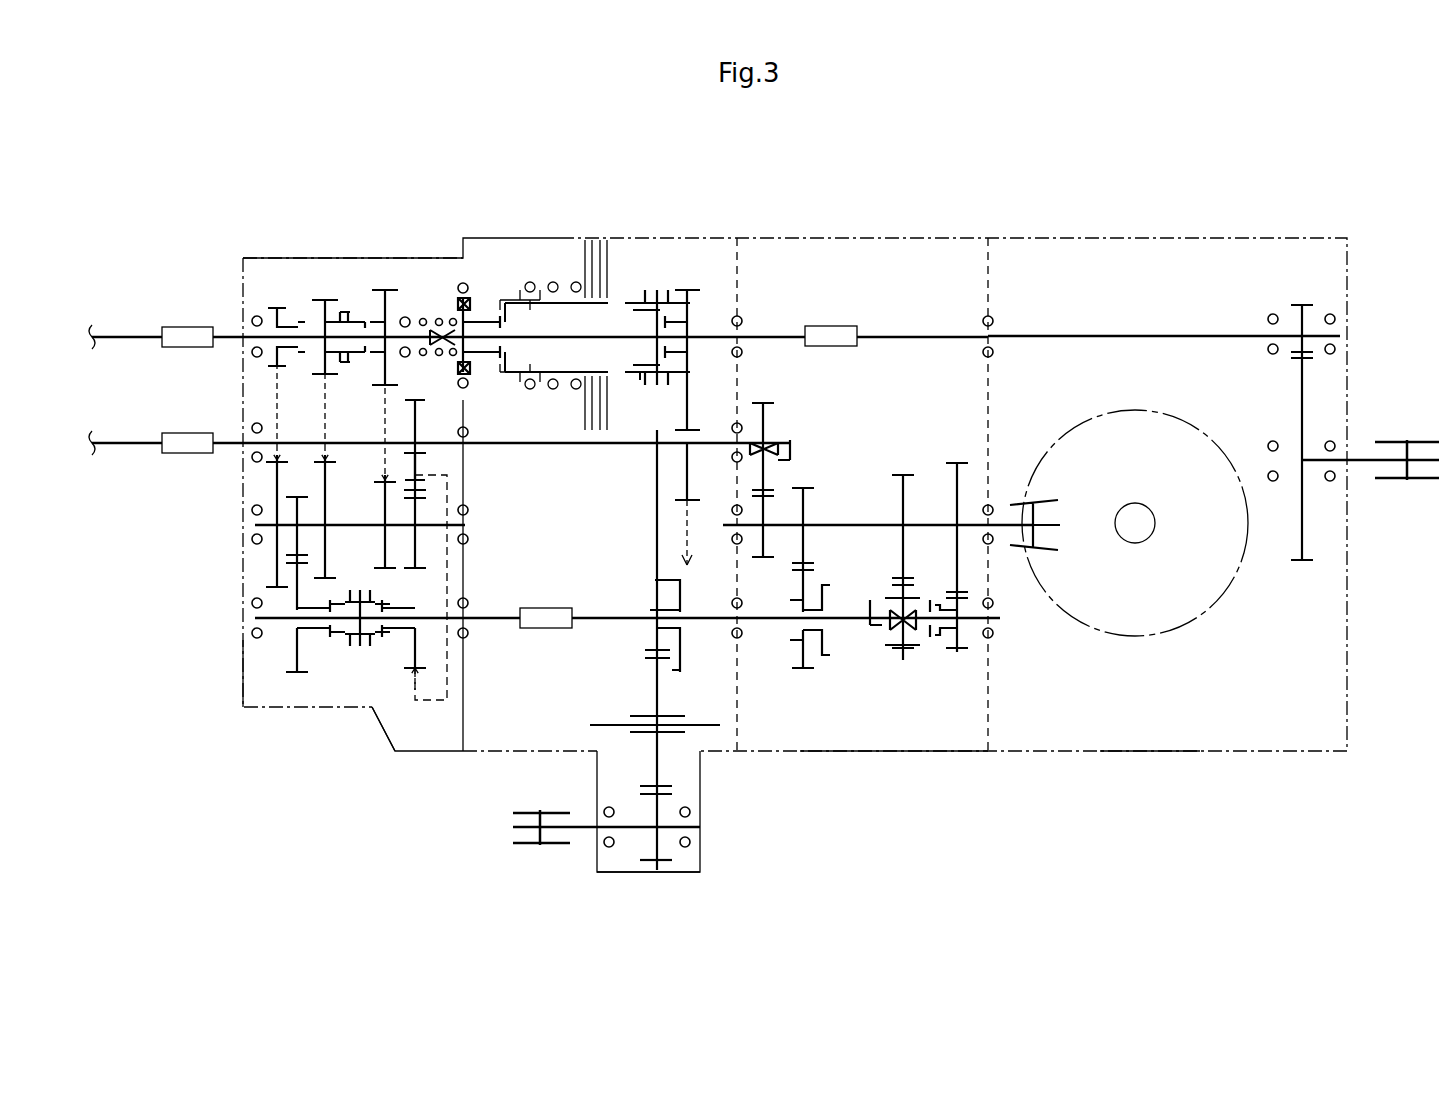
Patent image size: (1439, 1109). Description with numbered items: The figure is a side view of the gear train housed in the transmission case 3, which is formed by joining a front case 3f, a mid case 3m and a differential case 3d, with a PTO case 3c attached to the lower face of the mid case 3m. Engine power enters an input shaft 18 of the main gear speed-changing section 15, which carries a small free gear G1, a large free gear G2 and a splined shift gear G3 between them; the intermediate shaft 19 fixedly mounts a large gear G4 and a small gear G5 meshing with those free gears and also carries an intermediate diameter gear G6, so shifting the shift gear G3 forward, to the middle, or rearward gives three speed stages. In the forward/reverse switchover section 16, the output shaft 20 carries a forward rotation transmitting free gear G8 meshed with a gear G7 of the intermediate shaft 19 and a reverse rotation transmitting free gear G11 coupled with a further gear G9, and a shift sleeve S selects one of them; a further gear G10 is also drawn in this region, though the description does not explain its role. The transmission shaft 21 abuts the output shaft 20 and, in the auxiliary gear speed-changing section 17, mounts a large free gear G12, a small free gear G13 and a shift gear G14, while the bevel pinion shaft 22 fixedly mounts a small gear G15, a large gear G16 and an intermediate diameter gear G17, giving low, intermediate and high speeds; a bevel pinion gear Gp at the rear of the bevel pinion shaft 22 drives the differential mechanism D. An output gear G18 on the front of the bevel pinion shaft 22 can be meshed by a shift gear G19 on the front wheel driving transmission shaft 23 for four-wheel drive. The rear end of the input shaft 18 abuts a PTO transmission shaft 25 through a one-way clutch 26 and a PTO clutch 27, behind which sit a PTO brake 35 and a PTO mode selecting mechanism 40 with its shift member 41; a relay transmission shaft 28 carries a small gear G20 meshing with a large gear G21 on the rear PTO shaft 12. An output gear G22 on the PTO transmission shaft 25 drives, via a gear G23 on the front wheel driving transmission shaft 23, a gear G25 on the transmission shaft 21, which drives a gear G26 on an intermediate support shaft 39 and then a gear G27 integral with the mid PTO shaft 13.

The transmission case 3 is at (905, 232).
The front case 3f is at (243, 655).
The mid case 3m is at (935, 755).
The differential case 3d is at (1155, 755).
The PTO case 3c is at (705, 855).
The rear PTO shaft 12 is at (1405, 440).
The mid PTO shaft 13 is at (530, 845).
The main gear speed-changing section 15 is at (310, 285).
The forward/reverse switchover section 16 is at (328, 690).
The auxiliary gear speed-changing section 17 is at (847, 712).
The input shaft 18 is at (228, 330).
The intermediate shaft 19 is at (360, 520).
The output shaft 20 is at (490, 625).
The transmission shaft 21 is at (625, 612).
The bevel pinion shaft 22 is at (858, 525).
The front wheel driving transmission shaft 23 is at (243, 437).
The PTO transmission shaft 25 is at (770, 330).
The one-way clutch 26 is at (462, 300).
The PTO clutch 27 is at (513, 270).
The relay transmission shaft 28 is at (1140, 330).
The PTO brake 35 is at (580, 265).
The intermediate support shaft 39 is at (640, 725).
The PTO mode selecting mechanism 40 is at (645, 280).
The shift member 41 is at (640, 380).
The shift sleeve S is at (360, 640).
The differential mechanism D is at (1125, 640).
The bevel pinion gear Gp is at (1035, 490).
The small free gear G1 is at (272, 305).
The large free gear G2 is at (385, 290).
The shift gear G3 is at (325, 300).
The large gear G4 is at (270, 485).
The small gear G5 is at (405, 555).
The intermediate diameter gear G6 is at (310, 565).
The gear G7 is at (290, 545).
The forward rotation transmitting free gear G8 is at (300, 660).
The gear G9 is at (405, 505).
The gear G10 is at (420, 410).
The reverse rotation transmitting free gear G11 is at (415, 660).
The large free gear G12 is at (803, 670).
The small free gear G13 is at (957, 650).
The shift gear G14 is at (895, 655).
The small gear G15 is at (800, 490).
The large gear G16 is at (960, 470).
The intermediate diameter gear G17 is at (903, 475).
The output gear G18 is at (778, 545).
The shift gear G19 is at (770, 420).
The small gear G20 is at (1300, 305).
The large gear G21 is at (1303, 570).
The output gear G22 is at (687, 300).
The gear G23 is at (690, 470).
The gear G25 is at (655, 625).
The gear G26 is at (660, 762).
The gear G27 is at (657, 875).